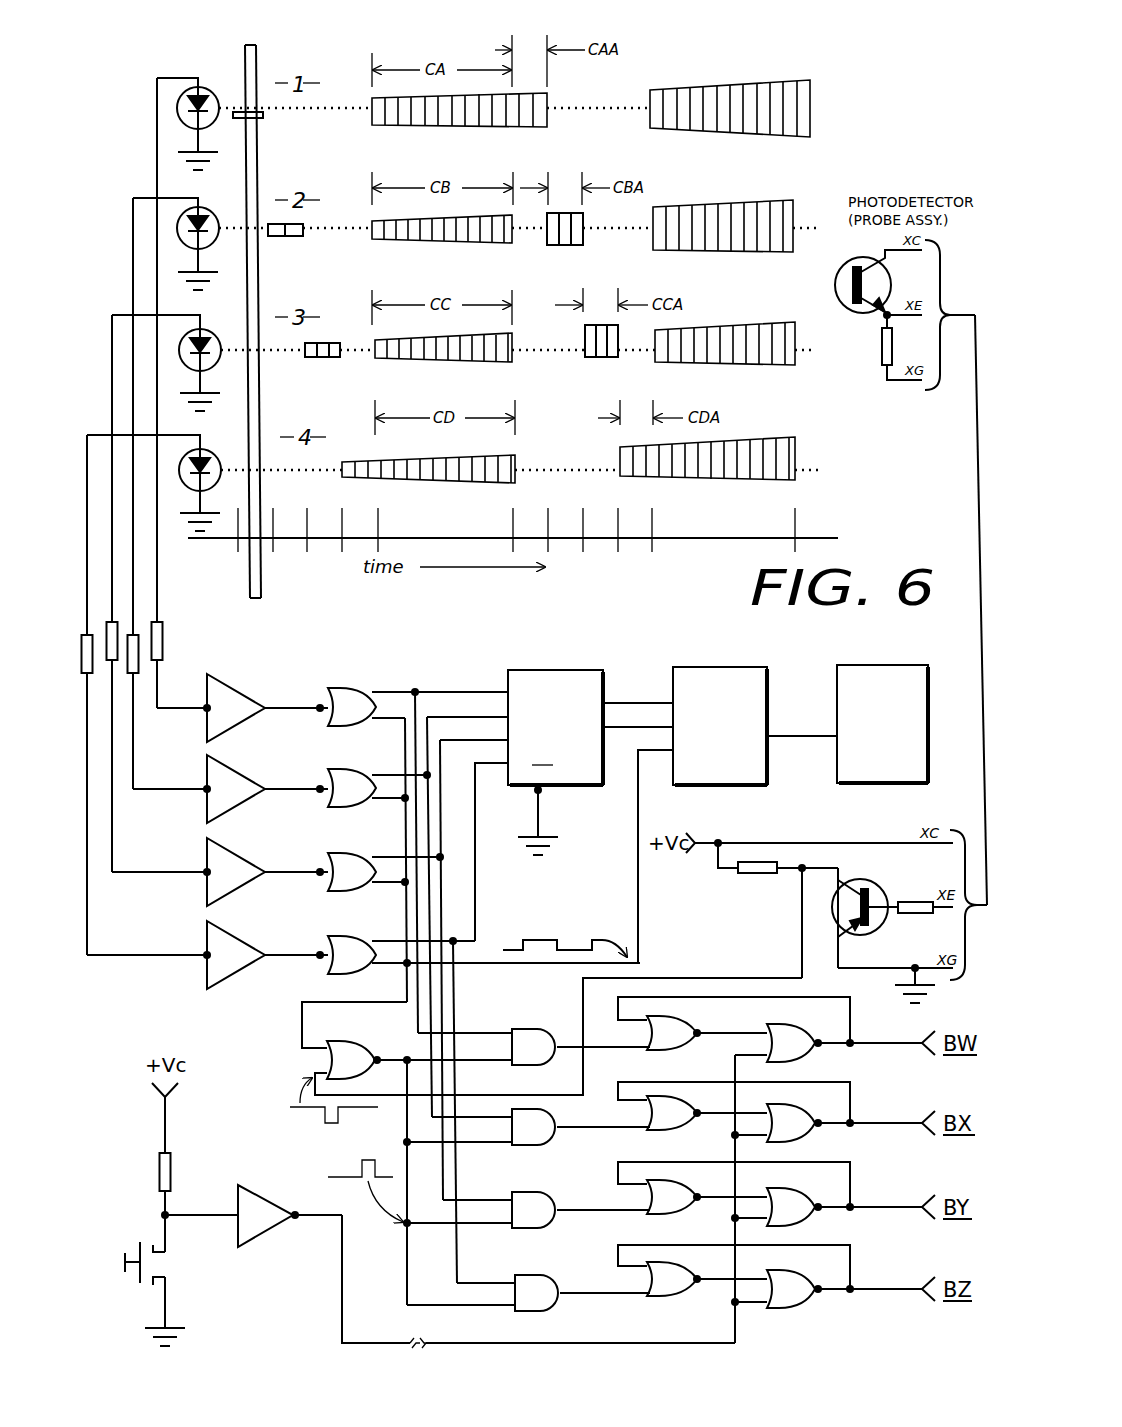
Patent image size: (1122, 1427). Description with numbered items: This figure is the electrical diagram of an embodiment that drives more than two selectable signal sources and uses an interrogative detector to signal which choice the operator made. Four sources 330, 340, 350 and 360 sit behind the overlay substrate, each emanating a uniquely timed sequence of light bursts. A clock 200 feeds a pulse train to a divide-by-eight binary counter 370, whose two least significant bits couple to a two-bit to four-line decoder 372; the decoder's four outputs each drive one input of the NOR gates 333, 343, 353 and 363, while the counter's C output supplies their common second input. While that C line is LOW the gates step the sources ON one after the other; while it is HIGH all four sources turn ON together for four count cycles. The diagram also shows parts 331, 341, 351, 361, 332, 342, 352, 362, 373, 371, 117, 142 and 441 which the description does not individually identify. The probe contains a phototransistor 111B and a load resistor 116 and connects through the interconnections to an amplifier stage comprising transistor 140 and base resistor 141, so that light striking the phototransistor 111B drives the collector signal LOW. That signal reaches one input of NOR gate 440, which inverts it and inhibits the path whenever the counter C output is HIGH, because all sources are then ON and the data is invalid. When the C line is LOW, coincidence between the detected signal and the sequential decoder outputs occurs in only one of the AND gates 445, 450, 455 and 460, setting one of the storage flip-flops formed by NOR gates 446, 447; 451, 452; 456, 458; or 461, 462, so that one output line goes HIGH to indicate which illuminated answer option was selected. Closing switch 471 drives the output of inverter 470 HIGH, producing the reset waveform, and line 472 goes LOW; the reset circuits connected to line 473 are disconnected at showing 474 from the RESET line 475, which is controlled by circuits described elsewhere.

The first source 330 is at (225, 79).
The second source 340 is at (225, 199).
The third source 350 is at (227, 321).
The fourth source 360 is at (228, 441).
The resistor 331 is at (163, 640).
The resistor 341 is at (139, 662).
The resistor 351 is at (118, 630).
The resistor 361 is at (84, 652).
The buffer amplifier 332 is at (258, 700).
The buffer amplifier 342 is at (260, 795).
The buffer amplifier 352 is at (260, 878).
The buffer amplifier 362 is at (260, 962).
The NOR gate 333 is at (345, 690).
The NOR gate 343 is at (340, 775).
The NOR gate 353 is at (340, 862).
The NOR gate 363 is at (340, 945).
The 2-bit to 4-line decoder 372 is at (585, 682).
The ground connection 373 is at (542, 793).
The divide-by-eight binary counter 370 is at (746, 682).
The clock line 371 is at (636, 835).
The clock 200 is at (910, 677).
The phototransistor 111B is at (848, 310).
The load resistor 116 is at (880, 348).
The cable 117 is at (973, 455).
The resistor 142 is at (760, 868).
The transistor 140 is at (870, 893).
The base resistor 141 is at (920, 915).
The signal line 441 is at (726, 978).
The NOR gate 440 is at (352, 1055).
The AND gate 445 is at (537, 1042).
The AND gate 450 is at (540, 1122).
The AND gate 455 is at (530, 1205).
The AND gate 460 is at (528, 1290).
The NOR gate 446 is at (678, 1026).
The NOR gate 451 is at (670, 1108).
The NOR gate 456 is at (672, 1192).
The NOR gate 461 is at (673, 1275).
The NOR gate 447 is at (795, 1040).
The NOR gate 452 is at (808, 1104).
The NOR gate 458 is at (814, 1187).
The NOR gate 462 is at (813, 1270).
The inverter 470 is at (258, 1210).
The switch 471 is at (122, 1262).
The line 472 is at (167, 1176).
The line 473 is at (395, 1350).
The showing 474 is at (418, 1357).
The line 475 is at (440, 1346).